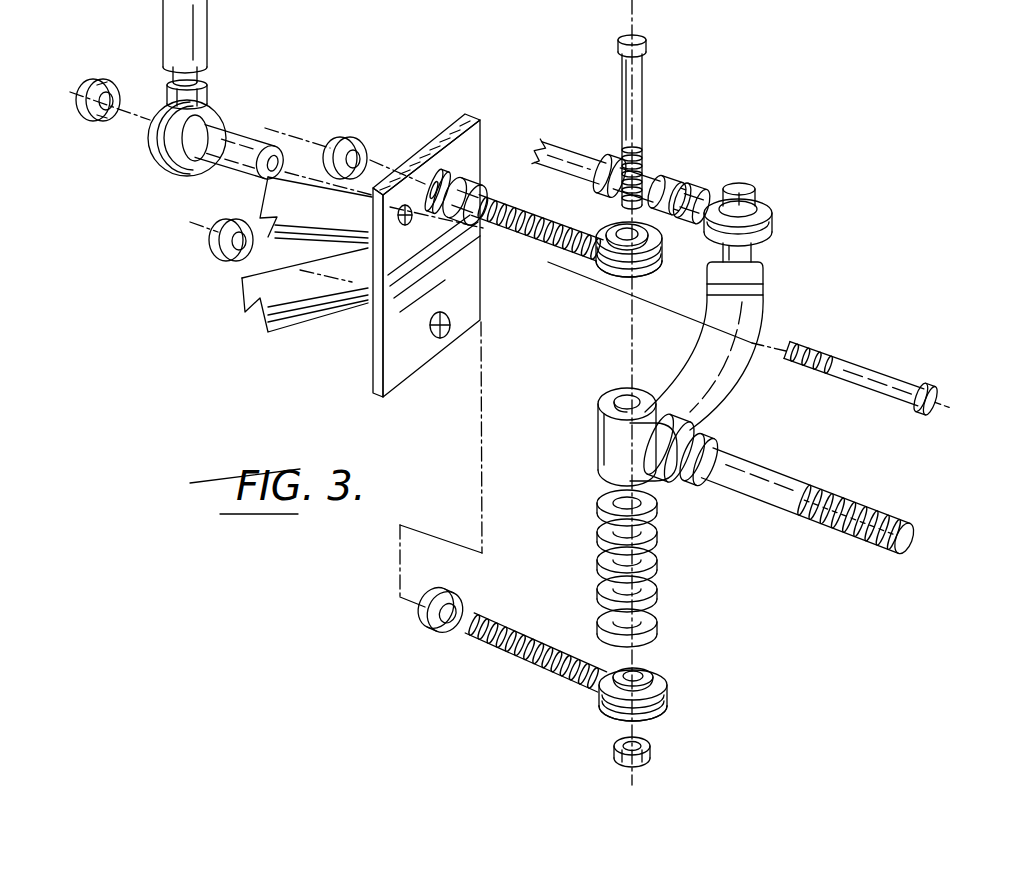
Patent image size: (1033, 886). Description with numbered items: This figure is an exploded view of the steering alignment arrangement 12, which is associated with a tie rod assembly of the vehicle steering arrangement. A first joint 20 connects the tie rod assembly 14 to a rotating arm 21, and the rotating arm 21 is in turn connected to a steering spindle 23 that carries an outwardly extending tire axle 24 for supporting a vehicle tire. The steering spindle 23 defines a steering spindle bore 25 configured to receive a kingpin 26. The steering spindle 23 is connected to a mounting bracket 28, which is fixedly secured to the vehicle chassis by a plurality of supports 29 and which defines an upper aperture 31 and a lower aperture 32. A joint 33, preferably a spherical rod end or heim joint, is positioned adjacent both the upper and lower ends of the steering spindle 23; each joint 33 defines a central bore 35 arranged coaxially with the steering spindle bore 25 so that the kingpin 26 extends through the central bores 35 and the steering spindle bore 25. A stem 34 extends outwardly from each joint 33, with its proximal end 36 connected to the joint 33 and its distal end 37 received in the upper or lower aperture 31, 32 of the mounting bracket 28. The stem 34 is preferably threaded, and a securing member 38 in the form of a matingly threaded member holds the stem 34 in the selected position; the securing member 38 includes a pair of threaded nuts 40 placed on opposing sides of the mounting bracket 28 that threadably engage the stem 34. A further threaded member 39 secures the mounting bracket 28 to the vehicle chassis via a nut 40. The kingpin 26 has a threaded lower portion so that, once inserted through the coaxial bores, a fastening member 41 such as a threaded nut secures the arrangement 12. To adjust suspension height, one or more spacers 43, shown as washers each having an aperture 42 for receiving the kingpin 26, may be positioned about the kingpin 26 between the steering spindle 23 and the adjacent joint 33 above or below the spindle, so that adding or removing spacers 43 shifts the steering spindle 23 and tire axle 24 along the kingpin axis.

The steering alignment arrangement 12 is at (803, 114).
The tie rod 14 is at (665, 178).
The first joint 20 is at (771, 213).
The rotating arm 21 is at (745, 317).
The steering spindle 23 is at (610, 439).
The tire axle 24 is at (194, 40).
The steering spindle bore 25 is at (620, 397).
The kingpin 26 is at (642, 92).
The mounting bracket 28 is at (393, 330).
The supports 29 is at (310, 224).
The upper aperture 31 is at (432, 178).
The lower aperture 32 is at (448, 336).
The joint 33 is at (623, 272).
The stem 34 is at (528, 232).
The central bore 35 is at (612, 238).
The proximal end 36 is at (592, 260).
The distal end 37 is at (497, 172).
The securing member 38 is at (100, 82).
The further threaded member 39 is at (873, 384).
The threaded nut 40 is at (107, 90).
The fastening member 41 is at (650, 757).
The aperture 42 is at (660, 524).
The spacer 43 is at (598, 514).